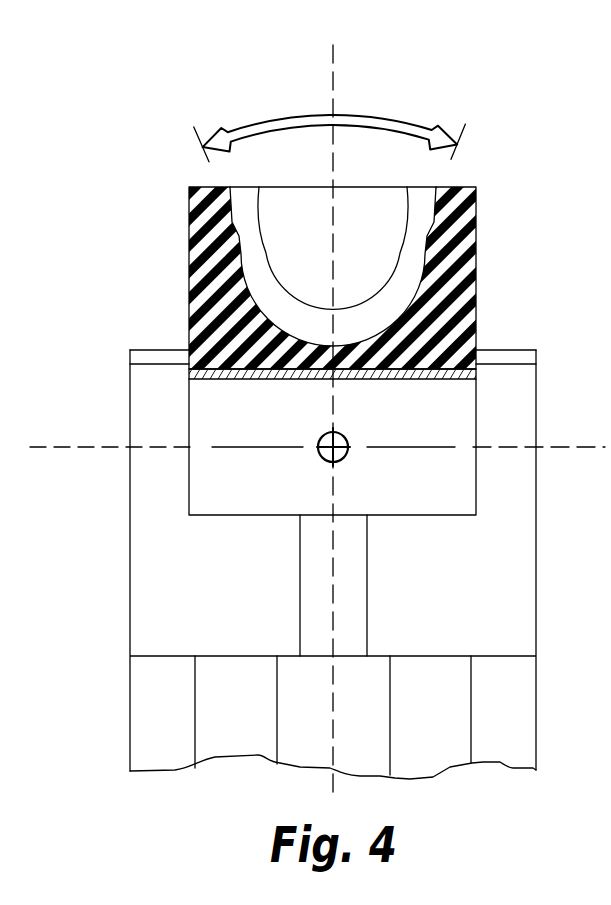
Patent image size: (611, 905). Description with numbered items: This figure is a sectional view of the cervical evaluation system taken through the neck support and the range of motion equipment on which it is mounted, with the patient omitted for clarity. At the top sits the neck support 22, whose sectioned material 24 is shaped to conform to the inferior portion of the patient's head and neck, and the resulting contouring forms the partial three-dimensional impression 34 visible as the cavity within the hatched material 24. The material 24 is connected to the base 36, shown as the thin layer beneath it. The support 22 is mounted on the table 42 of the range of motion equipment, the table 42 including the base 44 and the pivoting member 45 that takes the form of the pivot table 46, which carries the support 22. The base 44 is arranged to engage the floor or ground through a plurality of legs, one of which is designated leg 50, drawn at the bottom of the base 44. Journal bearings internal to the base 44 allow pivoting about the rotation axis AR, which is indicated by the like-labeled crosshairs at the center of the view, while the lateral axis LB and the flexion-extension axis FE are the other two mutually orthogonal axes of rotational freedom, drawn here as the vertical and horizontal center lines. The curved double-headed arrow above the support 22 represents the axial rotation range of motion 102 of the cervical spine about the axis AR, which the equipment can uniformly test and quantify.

The neck support 22 is at (478, 242).
The material 24 is at (458, 304).
The three-dimensional impression 34 is at (383, 290).
The base 36 is at (189, 373).
The table 42 is at (508, 348).
The base 44 is at (537, 521).
The pivoting member 45 is at (220, 517).
The pivot table 46 is at (457, 518).
The leg 50 is at (196, 716).
The axial rotation range of motion 102 is at (336, 114).
The lateral axis LB is at (334, 68).
The rotation axis AR is at (344, 437).
The flexion-extension axis FE is at (592, 447).